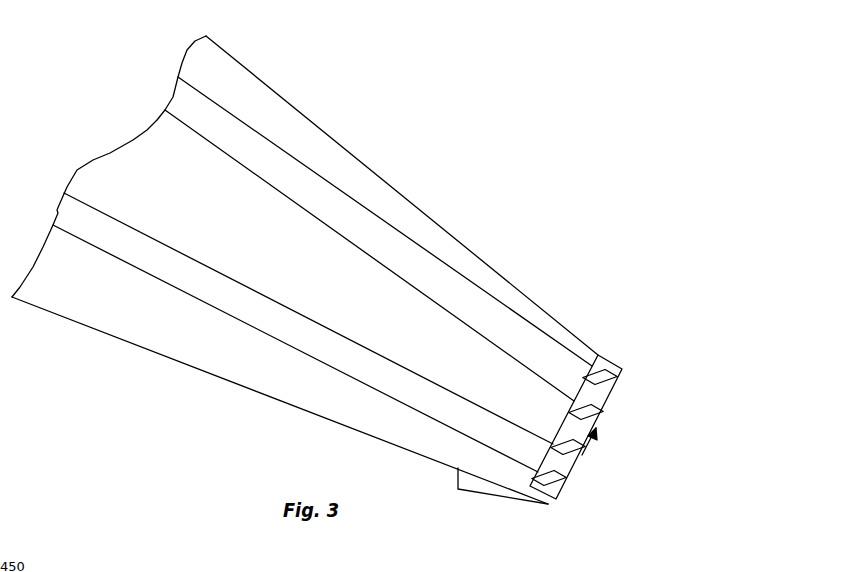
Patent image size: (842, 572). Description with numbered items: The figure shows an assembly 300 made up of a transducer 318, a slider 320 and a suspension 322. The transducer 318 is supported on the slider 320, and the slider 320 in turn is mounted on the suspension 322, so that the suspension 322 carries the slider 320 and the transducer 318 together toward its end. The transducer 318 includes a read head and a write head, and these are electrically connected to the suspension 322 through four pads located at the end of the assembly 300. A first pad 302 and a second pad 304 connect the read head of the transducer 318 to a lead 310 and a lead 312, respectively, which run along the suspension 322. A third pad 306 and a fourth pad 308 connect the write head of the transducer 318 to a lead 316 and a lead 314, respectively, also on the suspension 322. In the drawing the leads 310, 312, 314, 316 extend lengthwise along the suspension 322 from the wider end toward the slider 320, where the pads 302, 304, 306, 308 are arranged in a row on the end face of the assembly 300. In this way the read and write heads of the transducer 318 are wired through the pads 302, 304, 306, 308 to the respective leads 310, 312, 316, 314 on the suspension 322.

The assembly 300 is at (162, 423).
The first pad 302 is at (547, 490).
The second pad 304 is at (575, 463).
The third pad 306 is at (588, 405).
The fourth pad 308 is at (620, 368).
The lead 310 is at (267, 330).
The lead 312 is at (405, 357).
The lead 314 is at (460, 277).
The lead 316 is at (513, 352).
The transducer 318 is at (593, 440).
The slider 320 is at (492, 488).
The suspension 322 is at (395, 435).